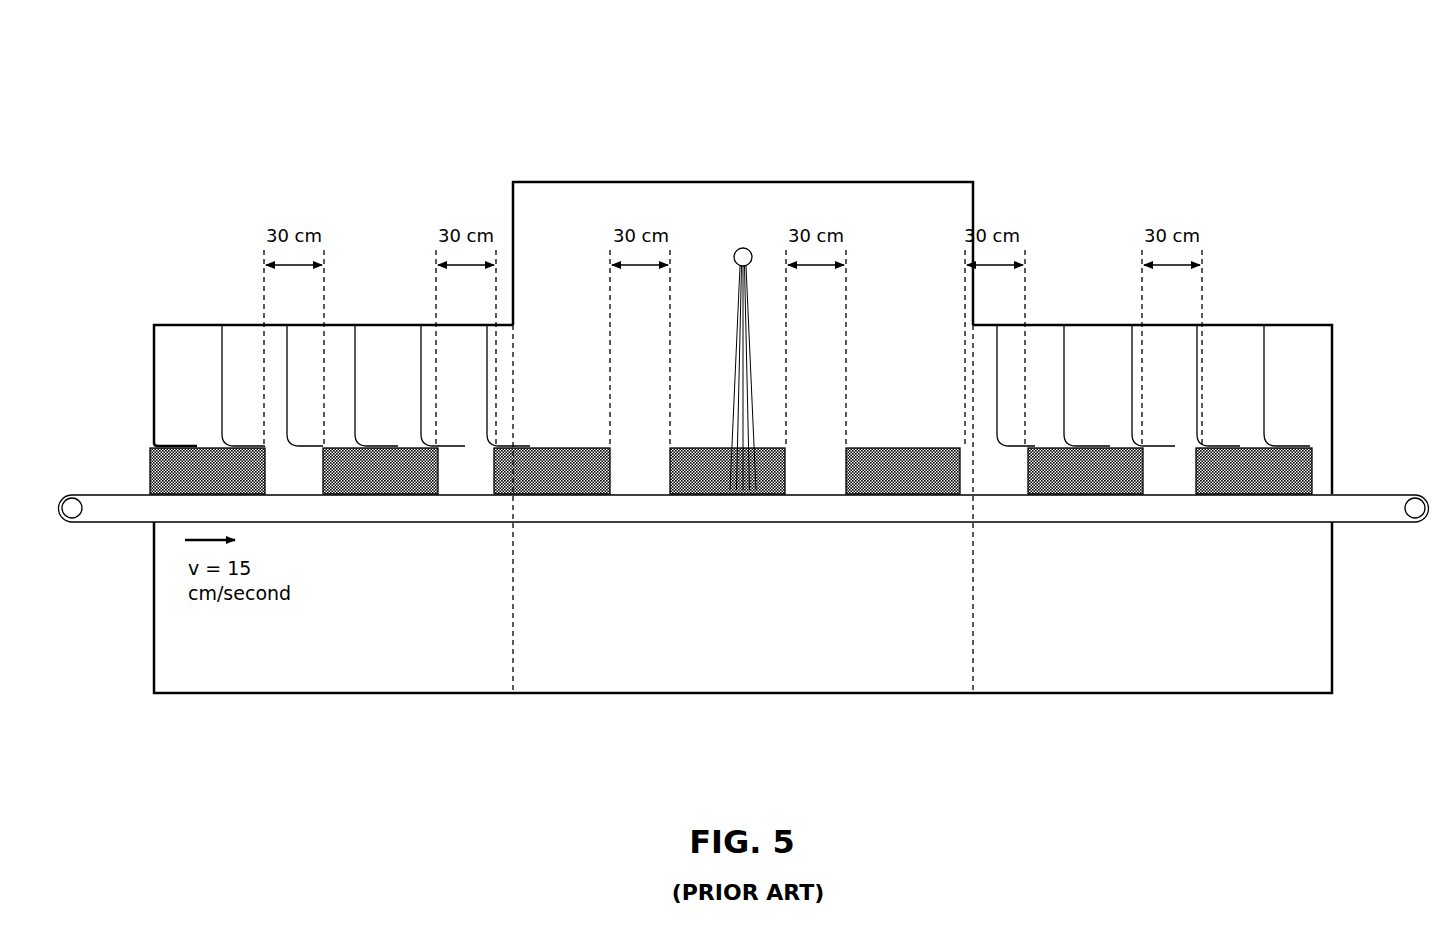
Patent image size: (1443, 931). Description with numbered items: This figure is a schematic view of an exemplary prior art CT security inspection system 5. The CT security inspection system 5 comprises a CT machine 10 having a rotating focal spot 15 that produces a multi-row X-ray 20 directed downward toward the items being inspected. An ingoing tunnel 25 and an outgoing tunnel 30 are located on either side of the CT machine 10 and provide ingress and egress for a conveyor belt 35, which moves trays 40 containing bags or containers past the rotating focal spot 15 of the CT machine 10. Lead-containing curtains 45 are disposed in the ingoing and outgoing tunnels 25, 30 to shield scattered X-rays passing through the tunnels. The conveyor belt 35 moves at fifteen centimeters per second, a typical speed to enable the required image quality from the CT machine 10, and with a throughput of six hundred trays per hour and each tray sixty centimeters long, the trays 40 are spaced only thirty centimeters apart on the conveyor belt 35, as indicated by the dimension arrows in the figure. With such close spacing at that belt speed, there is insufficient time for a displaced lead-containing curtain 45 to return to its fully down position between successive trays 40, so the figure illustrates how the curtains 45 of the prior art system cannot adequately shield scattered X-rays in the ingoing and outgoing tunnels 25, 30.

The CT security inspection system 5 is at (284, 90).
The CT machine 10 is at (640, 176).
The rotating focal spot 15 is at (745, 246).
The multi-row X-ray 20 is at (762, 423).
The ingoing tunnel 25 is at (188, 347).
The outgoing tunnel 30 is at (1236, 347).
The conveyor belt 35 is at (434, 525).
The trays 40 is at (731, 471).
The lead-containing curtains 45 is at (214, 379).